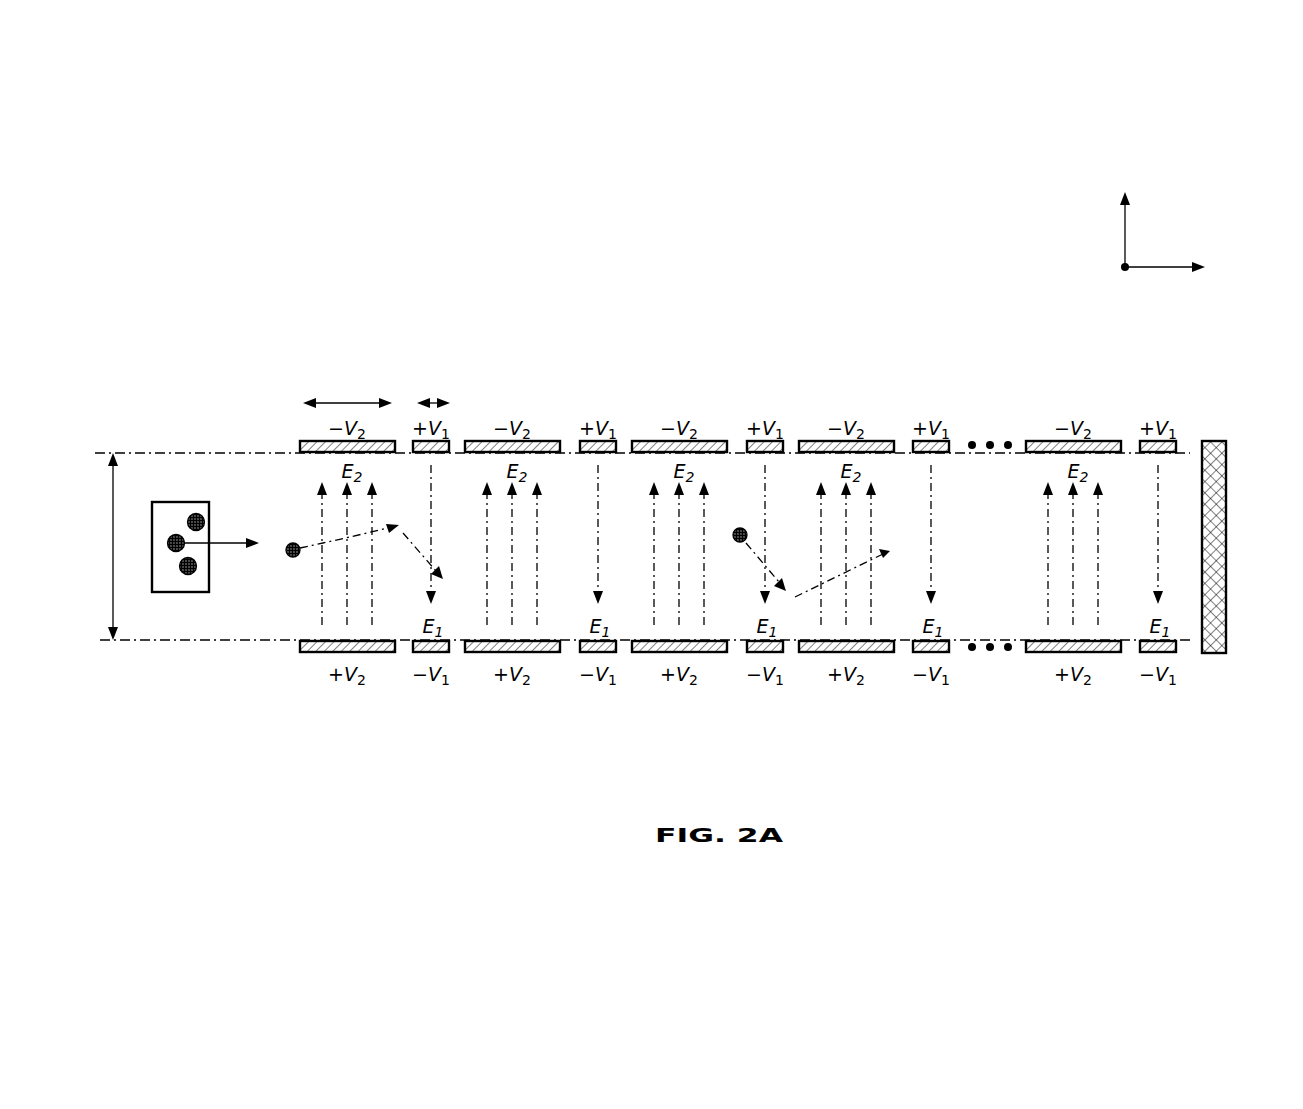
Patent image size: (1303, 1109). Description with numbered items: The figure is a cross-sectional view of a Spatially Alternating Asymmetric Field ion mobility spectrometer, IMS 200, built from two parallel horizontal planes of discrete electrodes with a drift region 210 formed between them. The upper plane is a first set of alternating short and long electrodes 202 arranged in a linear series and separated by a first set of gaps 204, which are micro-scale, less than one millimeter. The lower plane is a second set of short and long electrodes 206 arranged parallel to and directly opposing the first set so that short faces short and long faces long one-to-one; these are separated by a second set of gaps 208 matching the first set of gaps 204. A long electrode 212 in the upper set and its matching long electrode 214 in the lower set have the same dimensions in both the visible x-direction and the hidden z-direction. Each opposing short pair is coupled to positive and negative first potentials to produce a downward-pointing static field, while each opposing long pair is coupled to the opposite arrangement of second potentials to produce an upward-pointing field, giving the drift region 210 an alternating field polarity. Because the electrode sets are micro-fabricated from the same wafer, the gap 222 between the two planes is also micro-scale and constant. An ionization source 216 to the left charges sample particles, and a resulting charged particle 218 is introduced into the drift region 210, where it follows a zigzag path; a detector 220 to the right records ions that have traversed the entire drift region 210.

The SAAF IMS 200 is at (679, 479).
The first set of electrodes 202 is at (673, 379).
The first set of gaps 204 is at (456, 447).
The second set of electrodes 206 is at (655, 716).
The second set of gaps 208 is at (402, 652).
The drift region 210 is at (976, 538).
The long electrode 212 is at (280, 379).
The long electrode 214 is at (264, 716).
The ionization source 216 is at (170, 527).
The charged particle 218 is at (289, 556).
The detector 220 is at (1215, 655).
The gap 222 is at (88, 546).